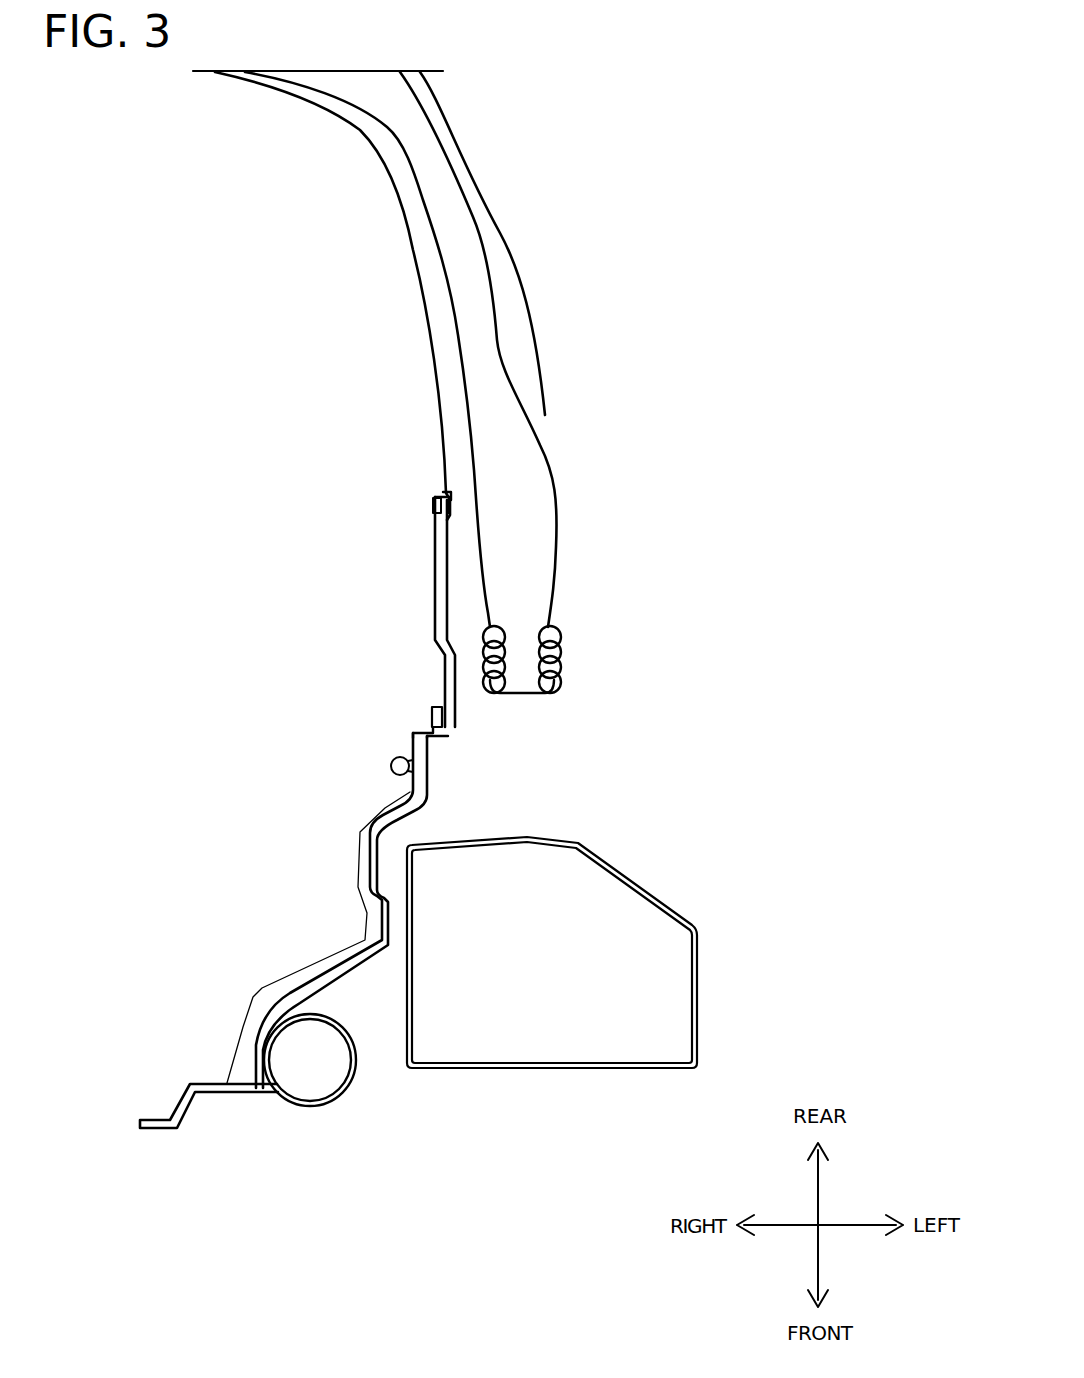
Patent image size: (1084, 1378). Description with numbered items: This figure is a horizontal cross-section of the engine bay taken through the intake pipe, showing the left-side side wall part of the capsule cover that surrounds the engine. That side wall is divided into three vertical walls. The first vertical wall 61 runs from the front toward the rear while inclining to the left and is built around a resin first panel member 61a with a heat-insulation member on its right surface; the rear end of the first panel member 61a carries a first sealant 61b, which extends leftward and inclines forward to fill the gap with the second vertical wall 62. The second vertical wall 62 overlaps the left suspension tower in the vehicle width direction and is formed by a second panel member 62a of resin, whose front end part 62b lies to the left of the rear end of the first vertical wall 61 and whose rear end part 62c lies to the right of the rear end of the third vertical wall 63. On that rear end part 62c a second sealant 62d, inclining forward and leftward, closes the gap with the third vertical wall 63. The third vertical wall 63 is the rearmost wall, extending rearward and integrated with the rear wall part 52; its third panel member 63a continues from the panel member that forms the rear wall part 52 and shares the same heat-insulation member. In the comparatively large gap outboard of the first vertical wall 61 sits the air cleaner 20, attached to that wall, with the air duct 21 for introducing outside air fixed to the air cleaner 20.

The air cleaner 20 is at (683, 985).
The air duct 21 is at (332, 1085).
The rear wall part 52 is at (243, 97).
The first vertical wall 61 is at (322, 950).
The first panel member 61a is at (210, 1092).
The first sealant 61b is at (448, 727).
The second vertical wall 62 is at (426, 587).
The second panel member 62a is at (433, 583).
The front end part 62b is at (450, 705).
The rear end part 62c is at (433, 512).
The second sealant 62d is at (445, 493).
The third vertical wall 63 is at (352, 349).
The third panel member 63a is at (430, 320).